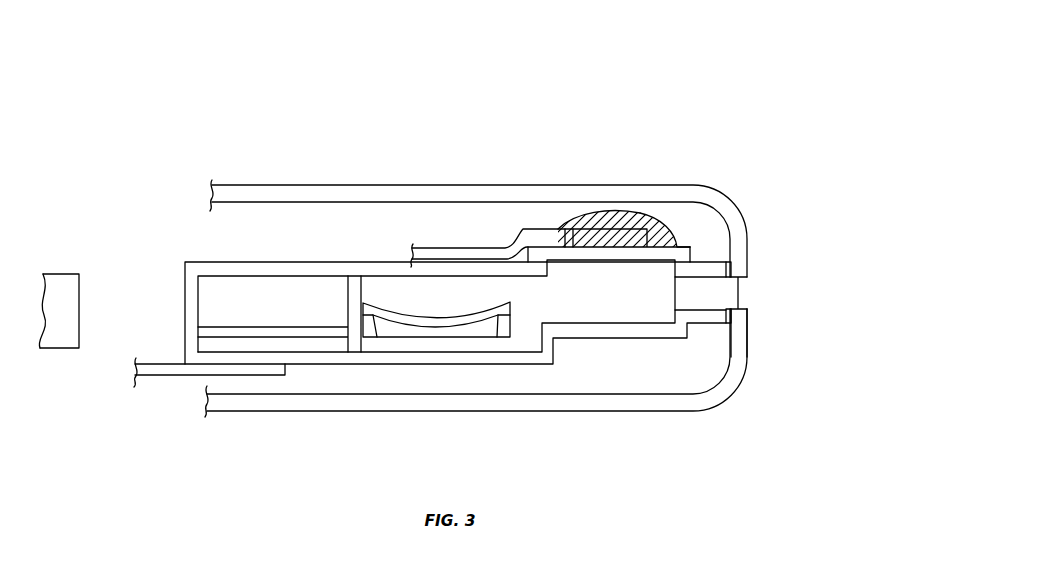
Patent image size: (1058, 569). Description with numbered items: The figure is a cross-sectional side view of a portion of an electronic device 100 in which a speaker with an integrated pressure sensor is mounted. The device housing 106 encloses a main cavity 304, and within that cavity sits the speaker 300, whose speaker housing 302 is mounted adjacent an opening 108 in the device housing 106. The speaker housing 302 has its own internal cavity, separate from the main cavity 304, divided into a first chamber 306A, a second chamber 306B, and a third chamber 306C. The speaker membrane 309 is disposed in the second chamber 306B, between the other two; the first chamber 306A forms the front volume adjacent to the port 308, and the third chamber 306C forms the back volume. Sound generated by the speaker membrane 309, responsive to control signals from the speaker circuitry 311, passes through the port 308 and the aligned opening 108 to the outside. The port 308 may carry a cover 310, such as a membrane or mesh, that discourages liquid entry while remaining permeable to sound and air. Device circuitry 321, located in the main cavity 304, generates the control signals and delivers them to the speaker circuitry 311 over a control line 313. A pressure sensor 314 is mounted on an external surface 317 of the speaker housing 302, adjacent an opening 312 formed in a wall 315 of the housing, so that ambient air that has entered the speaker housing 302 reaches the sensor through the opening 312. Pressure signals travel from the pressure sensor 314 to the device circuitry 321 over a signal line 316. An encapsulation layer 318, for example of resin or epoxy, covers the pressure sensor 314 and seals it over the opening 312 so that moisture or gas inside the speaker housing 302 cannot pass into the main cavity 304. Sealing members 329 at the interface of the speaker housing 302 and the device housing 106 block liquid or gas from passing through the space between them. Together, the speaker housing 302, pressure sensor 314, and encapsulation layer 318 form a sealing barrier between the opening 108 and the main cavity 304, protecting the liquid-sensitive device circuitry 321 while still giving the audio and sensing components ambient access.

The device 100 is at (700, 97).
The device housing 106 is at (720, 202).
The opening 108 is at (743, 280).
The speaker 300 is at (259, 219).
The speaker housing 302 is at (182, 266).
The main cavity 304 is at (354, 234).
The first chamber 306A is at (560, 200).
The second chamber 306B is at (436, 376).
The third chamber 306C is at (255, 314).
The port 308 is at (685, 302).
The speaker membrane 309 is at (447, 329).
The cover 310 is at (746, 305).
The speaker circuitry 311 is at (387, 346).
The opening 312 is at (602, 236).
The control line 313 is at (252, 378).
The pressure sensor 314 is at (611, 212).
The wall 315 is at (688, 245).
The signal line 316 is at (536, 236).
The external surface 317 is at (563, 233).
The encapsulation layer 318 is at (633, 218).
The device circuitry 321 is at (55, 272).
The sealing members 329 is at (747, 268).